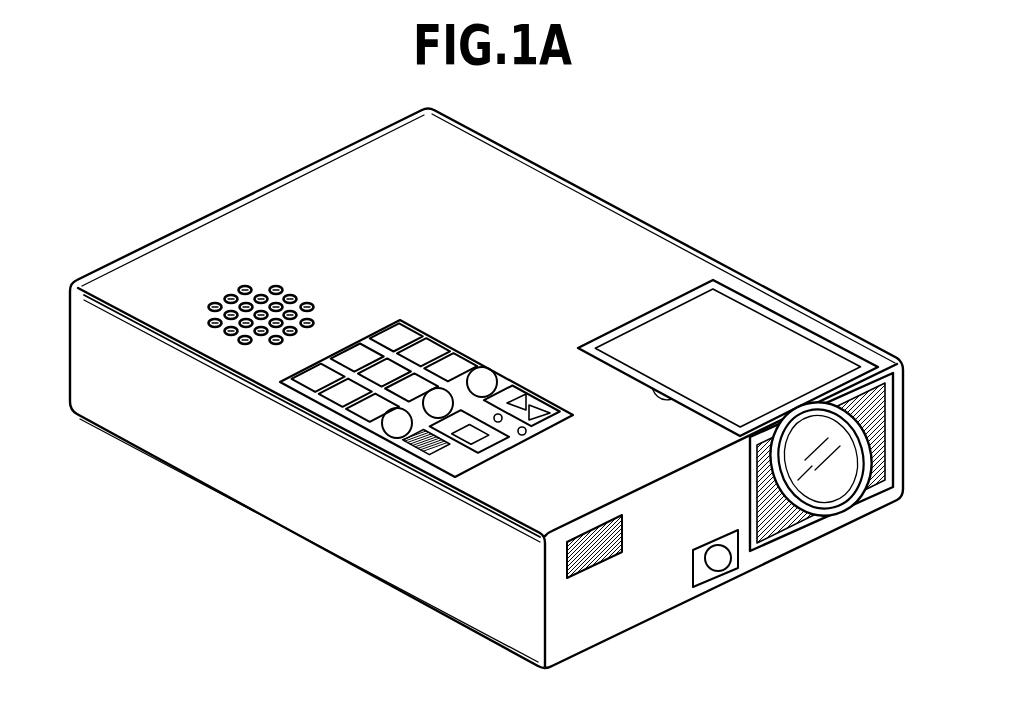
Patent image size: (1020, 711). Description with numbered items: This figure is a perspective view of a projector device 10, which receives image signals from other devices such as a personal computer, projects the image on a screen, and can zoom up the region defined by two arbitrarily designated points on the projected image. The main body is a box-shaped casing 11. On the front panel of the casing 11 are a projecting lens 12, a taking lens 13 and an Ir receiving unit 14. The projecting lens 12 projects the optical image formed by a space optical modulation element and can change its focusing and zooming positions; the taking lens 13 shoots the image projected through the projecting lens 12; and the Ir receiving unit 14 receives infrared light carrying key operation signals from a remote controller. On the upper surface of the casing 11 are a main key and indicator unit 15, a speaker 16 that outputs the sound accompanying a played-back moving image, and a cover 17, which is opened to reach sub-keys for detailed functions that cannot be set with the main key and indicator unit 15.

The projector device 10 is at (718, 208).
The casing 11 is at (522, 153).
The projecting lens 12 is at (822, 493).
The taking lens 13 is at (717, 560).
The Ir receiving unit 14 is at (587, 552).
The main key and indicator unit 15 is at (427, 330).
The speaker 16 is at (277, 282).
The cover 17 is at (780, 353).